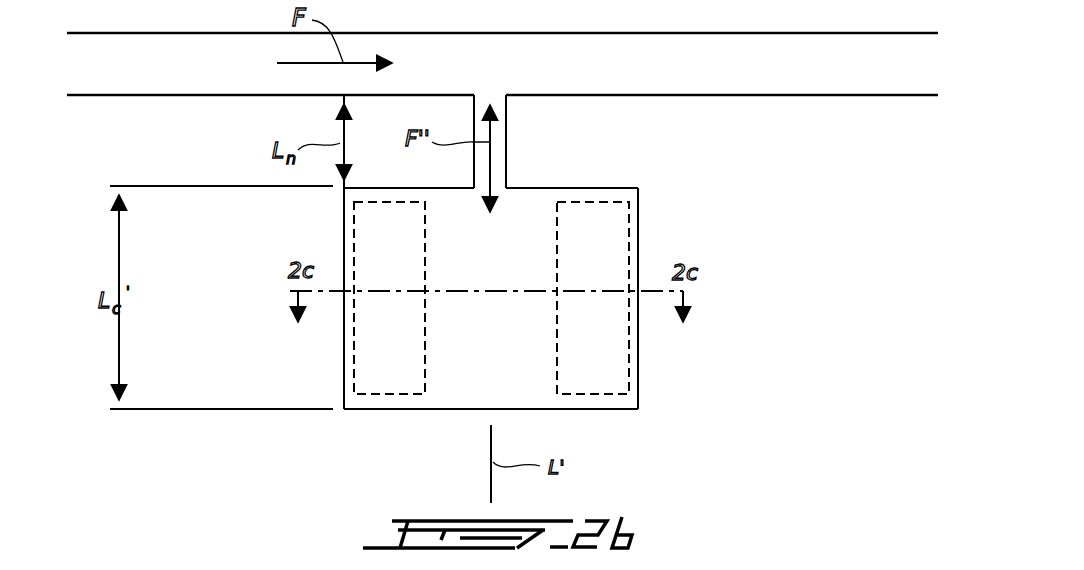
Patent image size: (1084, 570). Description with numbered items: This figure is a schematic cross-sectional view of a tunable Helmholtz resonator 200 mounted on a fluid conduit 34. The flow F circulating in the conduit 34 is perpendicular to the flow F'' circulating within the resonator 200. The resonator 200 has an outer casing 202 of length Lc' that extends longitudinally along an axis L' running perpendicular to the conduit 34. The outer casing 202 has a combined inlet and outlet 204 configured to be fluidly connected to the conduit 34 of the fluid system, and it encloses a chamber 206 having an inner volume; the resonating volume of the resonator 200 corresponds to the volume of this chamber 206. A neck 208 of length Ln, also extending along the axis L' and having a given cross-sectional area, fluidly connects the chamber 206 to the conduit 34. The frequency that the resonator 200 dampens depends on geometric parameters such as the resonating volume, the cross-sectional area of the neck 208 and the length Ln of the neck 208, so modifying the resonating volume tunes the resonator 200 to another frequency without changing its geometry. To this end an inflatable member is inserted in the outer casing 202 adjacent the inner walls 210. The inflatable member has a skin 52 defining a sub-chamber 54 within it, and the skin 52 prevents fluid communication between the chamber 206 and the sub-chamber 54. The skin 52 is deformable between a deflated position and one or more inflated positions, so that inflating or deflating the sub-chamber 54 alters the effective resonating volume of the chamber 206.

The conduit 34 is at (807, 33).
The Helmholtz resonator 200 is at (804, 176).
The neck 208 is at (507, 113).
The combined inlet and outlet 204 is at (518, 175).
The outer casing 202 is at (646, 387).
The inner walls 210 is at (382, 409).
The sub-chamber 54 is at (398, 265).
The skin 52 is at (629, 222).
The chamber 206 is at (512, 358).